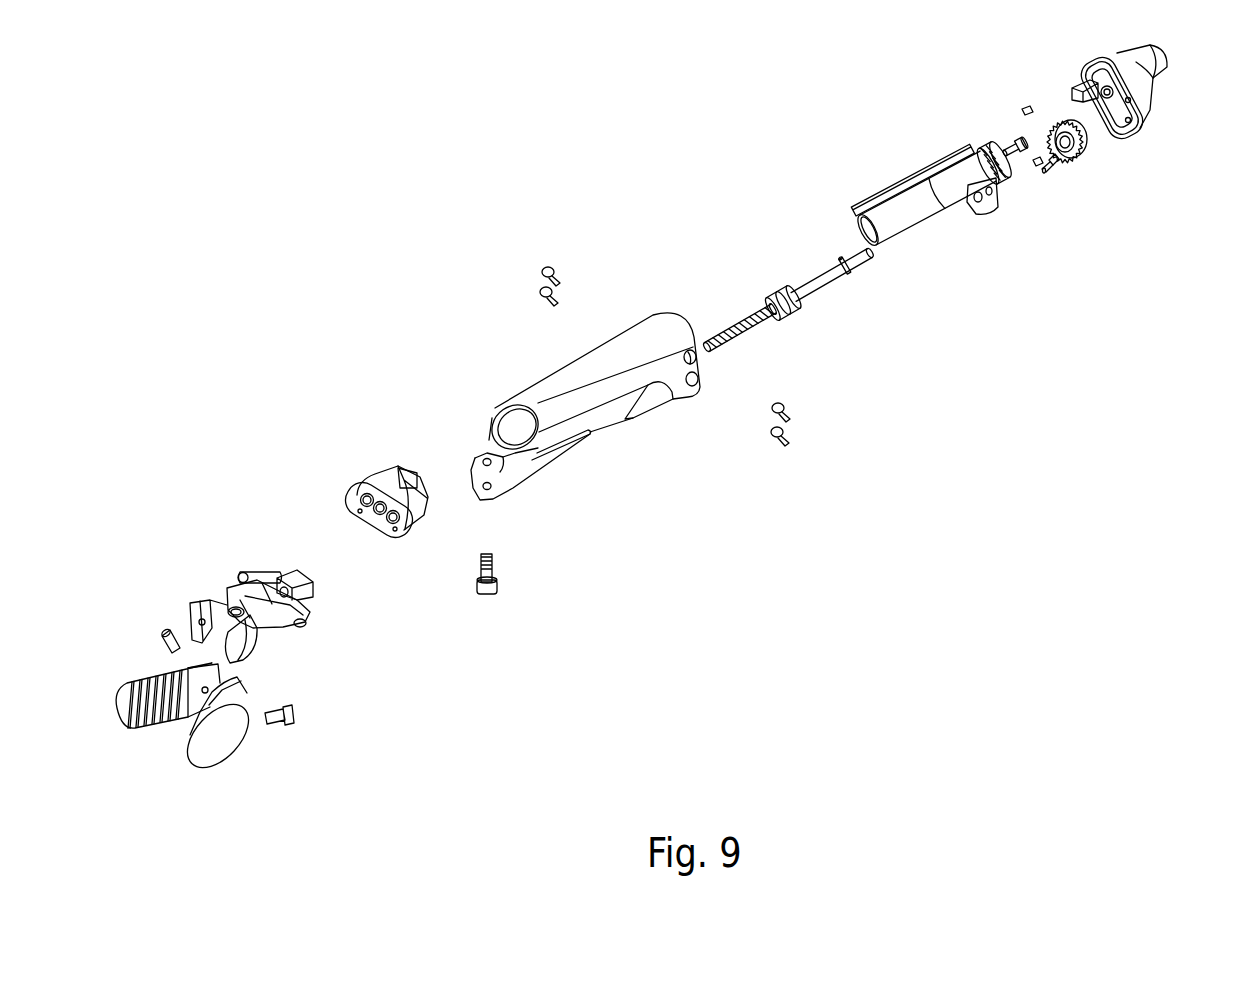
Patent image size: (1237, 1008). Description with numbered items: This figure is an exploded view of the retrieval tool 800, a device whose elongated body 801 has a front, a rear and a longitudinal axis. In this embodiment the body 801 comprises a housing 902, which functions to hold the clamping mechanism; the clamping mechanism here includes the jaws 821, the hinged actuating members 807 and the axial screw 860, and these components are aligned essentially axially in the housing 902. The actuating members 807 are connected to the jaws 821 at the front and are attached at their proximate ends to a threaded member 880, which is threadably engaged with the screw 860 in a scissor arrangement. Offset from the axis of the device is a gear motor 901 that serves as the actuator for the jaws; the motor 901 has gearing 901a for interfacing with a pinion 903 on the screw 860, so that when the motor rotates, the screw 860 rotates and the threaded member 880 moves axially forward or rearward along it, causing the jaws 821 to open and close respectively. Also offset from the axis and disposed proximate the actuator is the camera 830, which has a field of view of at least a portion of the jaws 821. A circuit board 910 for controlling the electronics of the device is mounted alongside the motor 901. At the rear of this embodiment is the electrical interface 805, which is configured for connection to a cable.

The retrieval tool 800 is at (362, 197).
The elongated body 801 is at (649, 481).
The electrical interface 805 is at (1150, 108).
The actuating member 807 is at (300, 573).
The jaws 821 is at (225, 747).
The camera 830 is at (397, 533).
The axial screw 860 is at (729, 338).
The threaded member 880 is at (772, 288).
The gear motor 901 is at (918, 222).
The gearing 901a is at (983, 140).
The housing 902 is at (515, 397).
The pinion 903 is at (850, 278).
The circuit board 910 is at (903, 180).